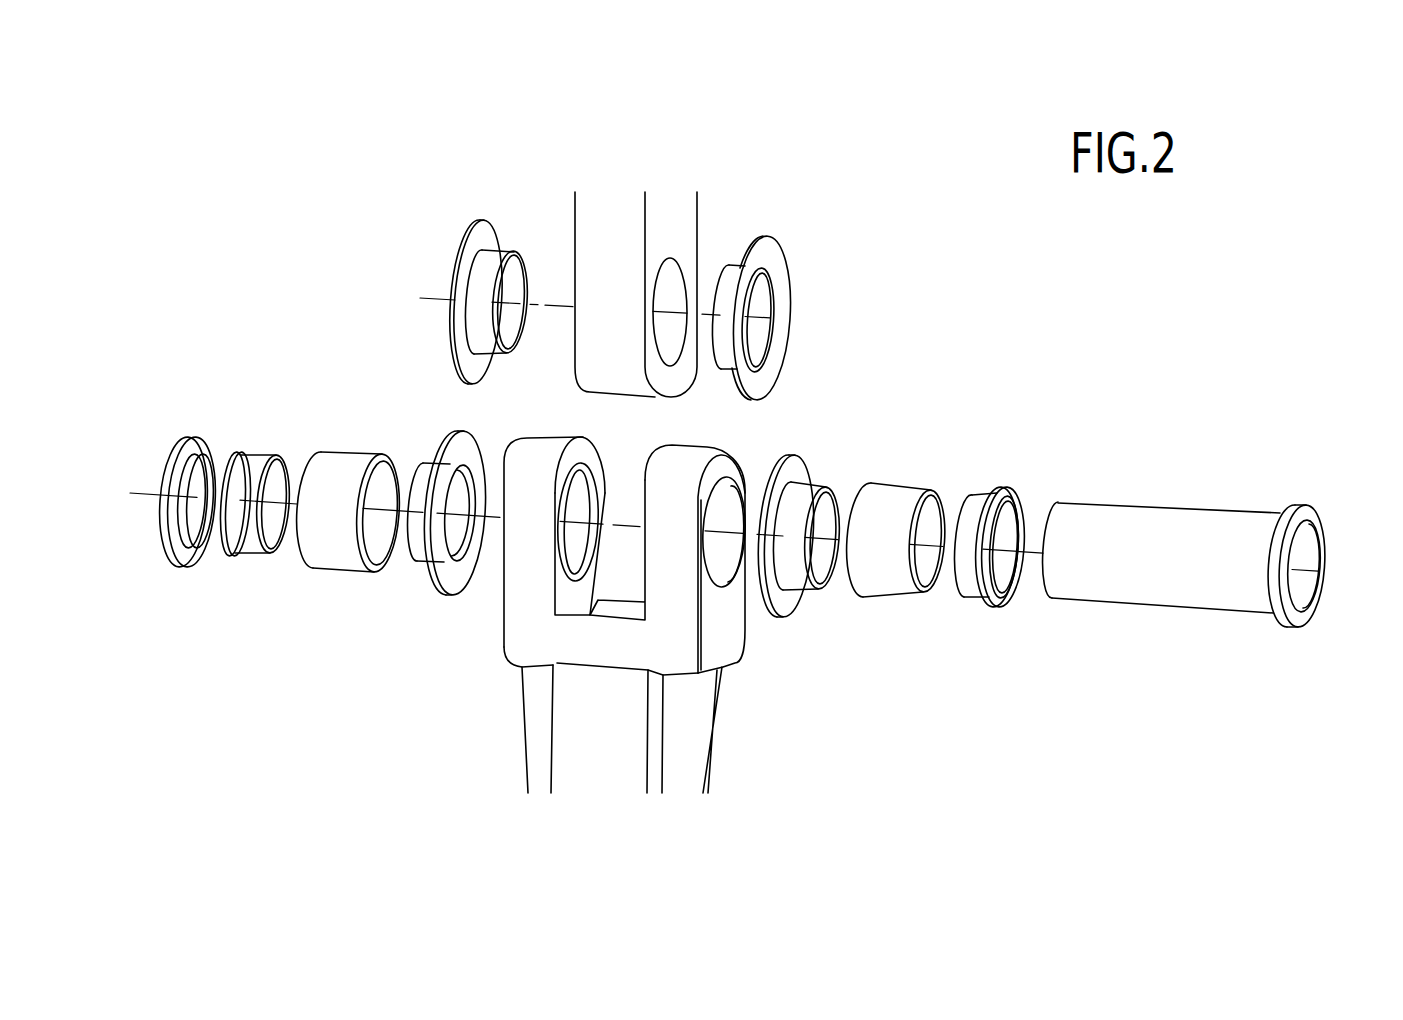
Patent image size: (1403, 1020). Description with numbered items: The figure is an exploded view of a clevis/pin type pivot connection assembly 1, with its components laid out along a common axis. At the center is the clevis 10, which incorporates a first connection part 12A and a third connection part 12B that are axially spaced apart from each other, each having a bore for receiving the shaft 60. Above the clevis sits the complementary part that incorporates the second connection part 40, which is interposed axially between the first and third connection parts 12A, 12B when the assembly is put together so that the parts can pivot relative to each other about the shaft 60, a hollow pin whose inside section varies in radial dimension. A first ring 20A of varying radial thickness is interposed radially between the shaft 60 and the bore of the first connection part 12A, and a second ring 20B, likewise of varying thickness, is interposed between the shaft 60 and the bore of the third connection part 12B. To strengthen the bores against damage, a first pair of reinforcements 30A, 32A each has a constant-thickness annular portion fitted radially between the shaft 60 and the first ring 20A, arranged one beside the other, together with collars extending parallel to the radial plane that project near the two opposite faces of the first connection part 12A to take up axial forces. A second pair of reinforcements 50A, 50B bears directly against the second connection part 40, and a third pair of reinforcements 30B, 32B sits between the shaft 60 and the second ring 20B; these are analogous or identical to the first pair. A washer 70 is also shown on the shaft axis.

The pivot connection type assembly 1 is at (286, 139).
The clevis 10 is at (517, 634).
The first connection part 12A is at (700, 452).
The third connection part 12B is at (550, 447).
The first ring 20A is at (895, 495).
The second ring 20B is at (345, 457).
The reinforcement of the first pair 30A is at (985, 498).
The reinforcement of the third pair 30B is at (262, 452).
The reinforcement of the first pair 32A is at (797, 462).
The reinforcement of the third pair 32B is at (455, 447).
The second connection part 40 is at (590, 222).
The reinforcement of the second pair 50A is at (762, 250).
The reinforcement of the second pair 50B is at (486, 242).
The shaft 60 is at (1303, 572).
The washer 70 is at (190, 440).